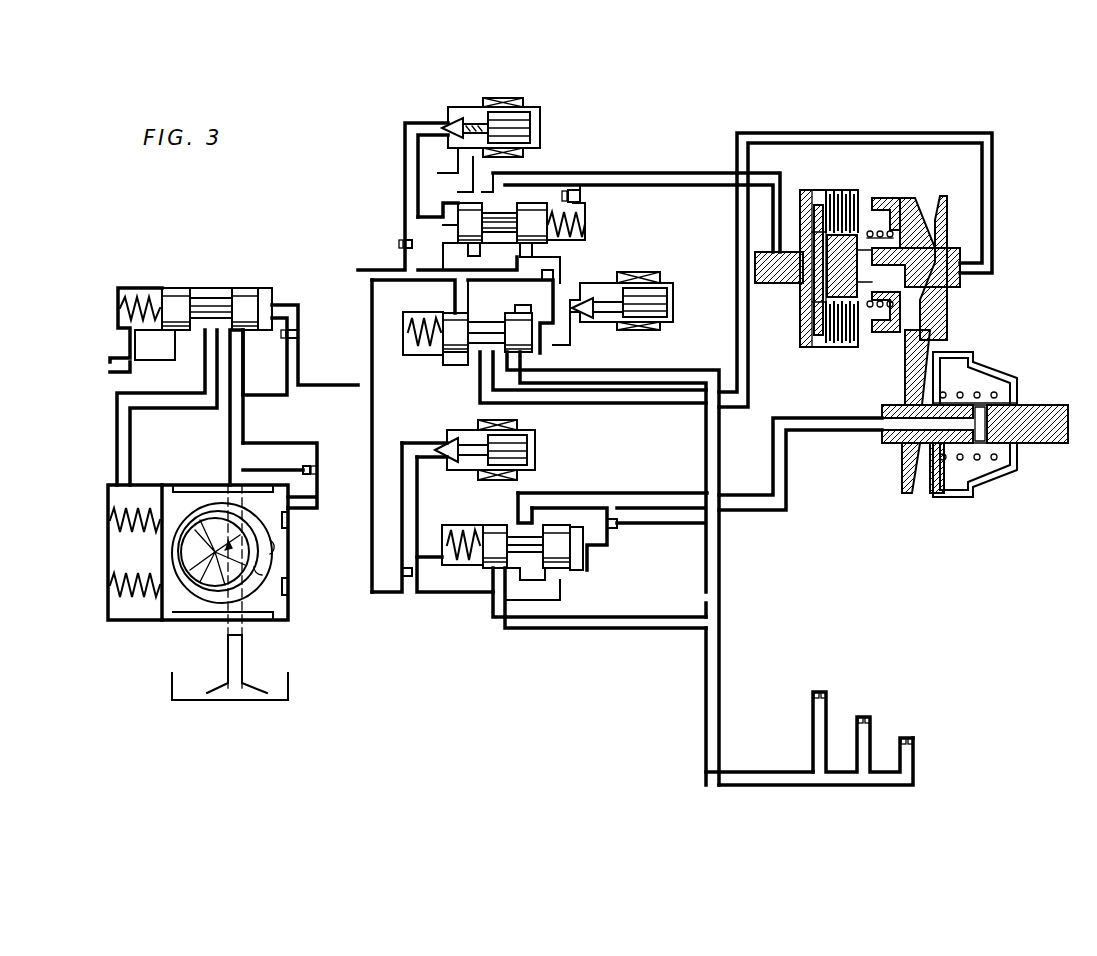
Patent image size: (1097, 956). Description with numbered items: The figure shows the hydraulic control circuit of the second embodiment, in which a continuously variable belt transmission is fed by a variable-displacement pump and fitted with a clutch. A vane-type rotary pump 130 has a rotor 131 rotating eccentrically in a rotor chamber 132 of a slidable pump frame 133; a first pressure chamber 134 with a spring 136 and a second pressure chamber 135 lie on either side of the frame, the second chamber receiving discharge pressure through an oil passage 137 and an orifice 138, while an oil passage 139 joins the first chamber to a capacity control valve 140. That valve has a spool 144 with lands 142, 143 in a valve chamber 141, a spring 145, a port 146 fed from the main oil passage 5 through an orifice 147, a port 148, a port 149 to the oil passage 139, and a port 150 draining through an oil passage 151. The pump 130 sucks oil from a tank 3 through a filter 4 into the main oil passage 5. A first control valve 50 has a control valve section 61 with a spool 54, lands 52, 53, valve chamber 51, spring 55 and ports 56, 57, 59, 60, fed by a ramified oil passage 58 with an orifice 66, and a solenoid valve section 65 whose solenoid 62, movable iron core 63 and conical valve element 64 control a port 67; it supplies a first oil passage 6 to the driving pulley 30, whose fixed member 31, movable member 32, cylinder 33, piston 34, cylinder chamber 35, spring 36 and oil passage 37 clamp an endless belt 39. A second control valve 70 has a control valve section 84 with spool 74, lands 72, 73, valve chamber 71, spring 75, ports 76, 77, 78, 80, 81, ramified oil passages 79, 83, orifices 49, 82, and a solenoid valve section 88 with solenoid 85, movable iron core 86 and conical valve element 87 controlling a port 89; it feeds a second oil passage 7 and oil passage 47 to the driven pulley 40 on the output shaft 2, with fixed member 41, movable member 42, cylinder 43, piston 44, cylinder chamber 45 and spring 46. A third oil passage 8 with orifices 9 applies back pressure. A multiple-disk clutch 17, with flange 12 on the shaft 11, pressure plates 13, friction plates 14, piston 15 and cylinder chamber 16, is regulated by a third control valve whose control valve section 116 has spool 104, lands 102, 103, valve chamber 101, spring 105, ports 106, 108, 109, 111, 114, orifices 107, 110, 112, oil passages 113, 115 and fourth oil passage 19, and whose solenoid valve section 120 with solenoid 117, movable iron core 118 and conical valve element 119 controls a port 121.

The output shaft 2 is at (1040, 412).
The tank 3 is at (270, 702).
The filter 4 is at (255, 688).
The main oil passage 5 is at (230, 448).
The first oil passage 6 is at (757, 132).
The second oil passage 7 is at (765, 503).
The third oil passage 8 is at (722, 690).
The orifices 9 is at (822, 690).
The shaft 11 is at (762, 250).
The flange 12 is at (804, 190).
The annular pressure plates 13 is at (835, 345).
The annular friction plates 14 is at (845, 345).
The piston 15 is at (810, 348).
The cylinder chamber 16 is at (812, 330).
The multiple-disk clutch 17 is at (795, 350).
The fourth oil passage 19 is at (698, 172).
The driving pulley 30 is at (965, 190).
The fixed member 31 is at (942, 228).
The movable member 32 is at (918, 200).
The cylinder 33 is at (882, 198).
The piston 34 is at (870, 215).
The cylinder chamber 35 is at (893, 200).
The spring 36 is at (890, 335).
The oil passage 37 is at (958, 268).
The endless belt 39 is at (925, 320).
The driven pulley 40 is at (988, 490).
The fixed member 41 is at (905, 470).
The movable member 42 is at (930, 495).
The cylinder 43 is at (955, 500).
The piston 44 is at (990, 382).
The cylinder chamber 45 is at (950, 360).
The spring 46 is at (1015, 481).
The oil passage 47 is at (884, 432).
The orifice 49 is at (620, 524).
The first control valve 50 is at (662, 268).
The valve chamber 51 is at (515, 330).
The land 52 is at (530, 320).
The land 53 is at (455, 338).
The spool 54 is at (480, 330).
The spring 55 is at (450, 348).
The port 56 is at (560, 328).
The port 57 is at (462, 298).
The ramified oil passage 58 is at (380, 278).
The port 59 is at (485, 355).
The port 60 is at (512, 356).
The control valve section 61 is at (405, 340).
The solenoid 62 is at (662, 326).
The movable iron core 63 is at (668, 300).
The conical valve element 64 is at (600, 312).
The solenoid valve section 65 is at (685, 310).
The orifice 66 is at (553, 276).
The port 67 is at (590, 322).
The second control valve 70 is at (598, 478).
The valve chamber 71 is at (532, 578).
The land 72 is at (560, 565).
The land 73 is at (492, 570).
The spool 74 is at (520, 580).
The spring 75 is at (455, 562).
The port 76 is at (590, 545).
The port 77 is at (518, 503).
The port 78 is at (552, 582).
The ramified oil passage 79 is at (433, 600).
The port 80 is at (498, 580).
The port 81 is at (440, 545).
The orifice 82 is at (400, 572).
The ramified oil passage 83 is at (400, 462).
The control valve section 84 is at (595, 568).
The solenoid 85 is at (520, 428).
The movable iron core 86 is at (528, 462).
The conical valve element 87 is at (445, 455).
The solenoid valve section 88 is at (548, 452).
The port 89 is at (425, 446).
The valve chamber 101 is at (443, 208).
The land 102 is at (560, 205).
The land 103 is at (458, 228).
The spool 104 is at (535, 215).
The spring 105 is at (585, 225).
The port 106 is at (586, 212).
The orifice 107 is at (582, 196).
The port 108 is at (515, 208).
The port 109 is at (534, 252).
The orifice 110 is at (470, 255).
The port 111 is at (443, 225).
The orifice 112 is at (404, 244).
The oil passage 113 is at (404, 135).
The port 114 is at (500, 218).
The oil passage 115 is at (440, 175).
The control valve section 116 is at (650, 208).
The solenoid 117 is at (503, 98).
The movable iron core 118 is at (530, 118).
The conical valve element 119 is at (452, 122).
The solenoid valve section 120 is at (530, 100).
The port 121 is at (428, 125).
The vane-type rotary pump 130 is at (162, 645).
The rotor 131 is at (198, 580).
The rotor chamber 132 is at (268, 575).
The pump frame 133 is at (270, 612).
The first pressure chamber 134 is at (120, 550).
The second pressure chamber 135 is at (288, 528).
The spring 136 is at (138, 595).
The oil passage 137 is at (285, 442).
The orifice 138 is at (315, 468).
The oil passage 139 is at (122, 445).
The capacity control valve 140 is at (118, 285).
The valve chamber 141 is at (210, 292).
The land 142 is at (245, 296).
The land 143 is at (175, 295).
The spool 144 is at (215, 310).
The spring 145 is at (140, 295).
The port 146 is at (272, 310).
The orifice 147 is at (300, 332).
The port 148 is at (245, 338).
The port 149 is at (205, 360).
The port 150 is at (160, 345).
The oil passage 151 is at (125, 368).